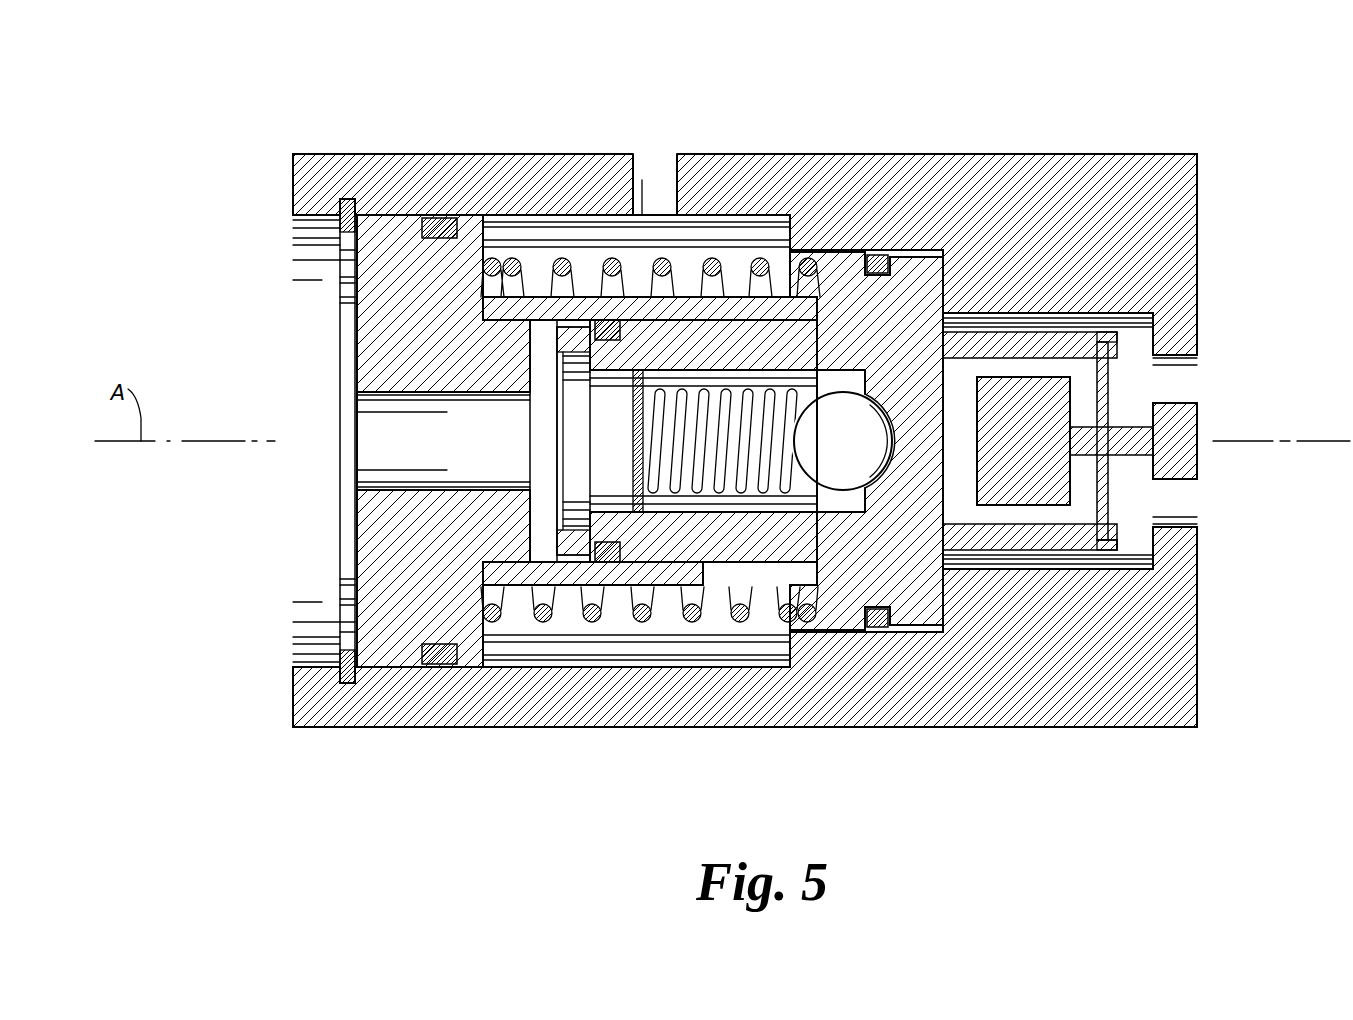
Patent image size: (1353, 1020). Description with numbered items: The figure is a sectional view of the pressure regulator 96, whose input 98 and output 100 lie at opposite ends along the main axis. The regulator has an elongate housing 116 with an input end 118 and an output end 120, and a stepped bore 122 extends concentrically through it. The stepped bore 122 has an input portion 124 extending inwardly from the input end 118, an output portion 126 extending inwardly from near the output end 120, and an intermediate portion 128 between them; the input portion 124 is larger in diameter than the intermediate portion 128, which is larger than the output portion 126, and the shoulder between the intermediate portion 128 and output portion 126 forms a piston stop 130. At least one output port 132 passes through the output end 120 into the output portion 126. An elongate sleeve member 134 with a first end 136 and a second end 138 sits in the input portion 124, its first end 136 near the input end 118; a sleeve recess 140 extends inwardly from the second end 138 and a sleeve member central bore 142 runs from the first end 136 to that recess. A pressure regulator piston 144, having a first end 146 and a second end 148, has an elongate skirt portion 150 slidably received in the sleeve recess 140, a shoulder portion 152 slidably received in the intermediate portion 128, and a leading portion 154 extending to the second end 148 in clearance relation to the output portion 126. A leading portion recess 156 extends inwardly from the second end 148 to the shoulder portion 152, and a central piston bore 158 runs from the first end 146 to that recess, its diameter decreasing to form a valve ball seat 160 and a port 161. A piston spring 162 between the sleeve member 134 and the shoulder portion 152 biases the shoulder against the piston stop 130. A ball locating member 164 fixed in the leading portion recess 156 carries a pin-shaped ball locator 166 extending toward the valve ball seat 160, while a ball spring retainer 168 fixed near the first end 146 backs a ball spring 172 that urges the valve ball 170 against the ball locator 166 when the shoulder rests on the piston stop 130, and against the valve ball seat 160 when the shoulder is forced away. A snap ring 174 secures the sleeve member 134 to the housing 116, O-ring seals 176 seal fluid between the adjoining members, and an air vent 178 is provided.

The pressure regulator 96 is at (243, 720).
The input 98 is at (210, 404).
The output 100 is at (1322, 400).
The housing 116 is at (690, 215).
The input end 118 is at (293, 241).
The output end 120 is at (1197, 338).
The stepped bore 122 is at (310, 665).
The input portion 124 is at (572, 650).
The output portion 126 is at (1103, 557).
The intermediate portion 128 is at (838, 600).
The piston stop 130 is at (965, 340).
The output port 132 is at (1197, 498).
The sleeve member 134 is at (383, 298).
The first end 136 is at (355, 351).
The second end 138 is at (703, 300).
The sleeve recess 140 is at (548, 558).
The sleeve member central bore 142 is at (400, 473).
The pressure regulator piston 144 is at (705, 562).
The first end 146 is at (548, 298).
The second end 148 is at (1197, 308).
The skirt portion 150 is at (755, 622).
The shoulder portion 152 is at (838, 252).
The leading portion 154 is at (1078, 425).
The leading portion recess 156 is at (1060, 377).
The central piston bore 158 is at (600, 376).
The valve ball seat 160 is at (905, 475).
The port 161 is at (985, 460).
The piston spring 162 is at (636, 622).
The ball locating member 164 is at (1197, 260).
The ball locator 166 is at (930, 465).
The ball spring retainer 168 is at (662, 392).
The valve ball 170 is at (850, 405).
The ball spring 172 is at (795, 253).
The snap ring 174 is at (348, 200).
The O-ring seals 176 is at (440, 222).
The air vent 178 is at (643, 160).